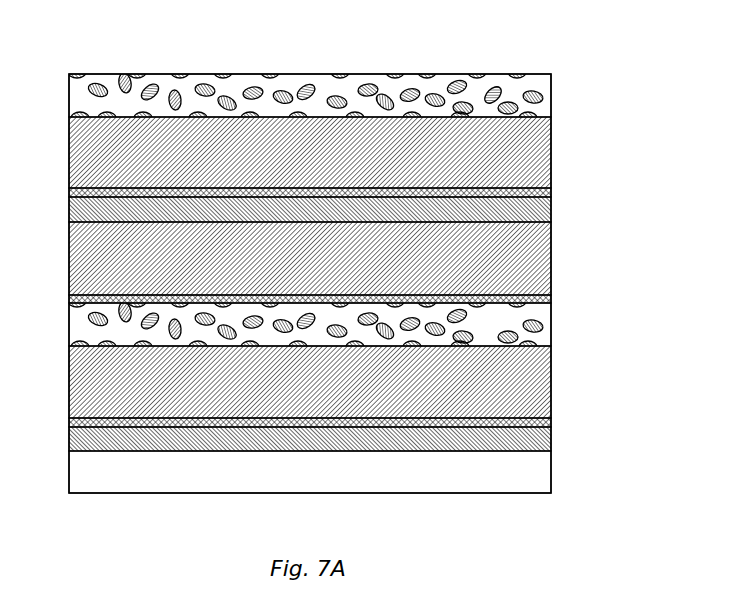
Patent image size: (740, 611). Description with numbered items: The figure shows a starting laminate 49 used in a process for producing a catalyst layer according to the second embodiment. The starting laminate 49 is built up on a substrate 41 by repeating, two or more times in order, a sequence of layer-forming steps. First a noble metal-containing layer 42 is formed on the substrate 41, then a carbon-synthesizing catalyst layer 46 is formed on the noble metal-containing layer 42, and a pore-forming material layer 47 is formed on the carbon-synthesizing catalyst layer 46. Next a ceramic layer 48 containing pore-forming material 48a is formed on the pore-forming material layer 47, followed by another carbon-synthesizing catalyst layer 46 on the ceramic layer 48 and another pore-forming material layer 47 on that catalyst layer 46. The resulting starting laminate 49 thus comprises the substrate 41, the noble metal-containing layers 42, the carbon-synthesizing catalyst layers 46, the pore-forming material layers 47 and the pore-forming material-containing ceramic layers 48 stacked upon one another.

The starting laminate 49 is at (313, 59).
The pore-forming material-containing ceramic layer 48 is at (552, 80).
The pore-forming material 48a is at (493, 90).
The pore-forming material layer 47 is at (552, 138).
The carbon-synthesizing catalyst layer 46 is at (552, 190).
The noble metal-containing layer 42 is at (552, 205).
The substrate 41 is at (533, 474).